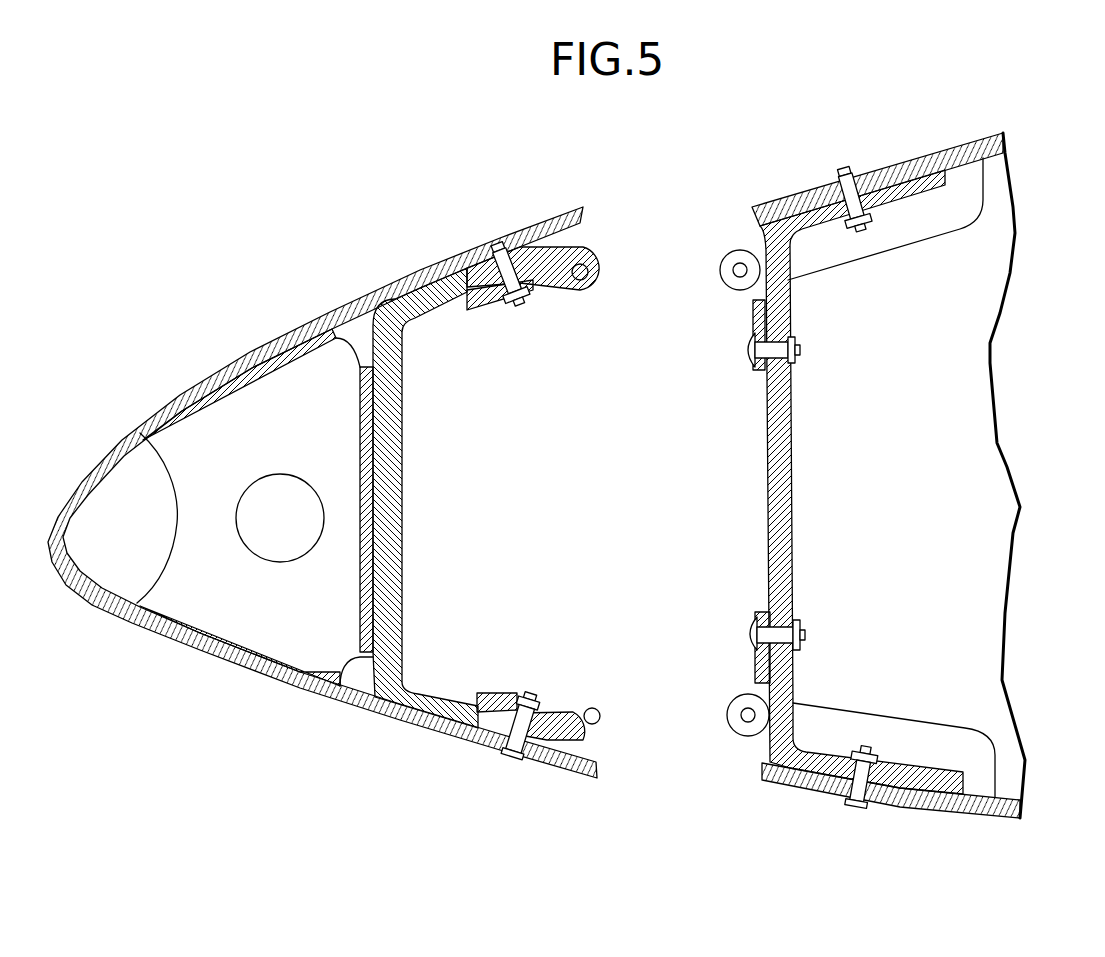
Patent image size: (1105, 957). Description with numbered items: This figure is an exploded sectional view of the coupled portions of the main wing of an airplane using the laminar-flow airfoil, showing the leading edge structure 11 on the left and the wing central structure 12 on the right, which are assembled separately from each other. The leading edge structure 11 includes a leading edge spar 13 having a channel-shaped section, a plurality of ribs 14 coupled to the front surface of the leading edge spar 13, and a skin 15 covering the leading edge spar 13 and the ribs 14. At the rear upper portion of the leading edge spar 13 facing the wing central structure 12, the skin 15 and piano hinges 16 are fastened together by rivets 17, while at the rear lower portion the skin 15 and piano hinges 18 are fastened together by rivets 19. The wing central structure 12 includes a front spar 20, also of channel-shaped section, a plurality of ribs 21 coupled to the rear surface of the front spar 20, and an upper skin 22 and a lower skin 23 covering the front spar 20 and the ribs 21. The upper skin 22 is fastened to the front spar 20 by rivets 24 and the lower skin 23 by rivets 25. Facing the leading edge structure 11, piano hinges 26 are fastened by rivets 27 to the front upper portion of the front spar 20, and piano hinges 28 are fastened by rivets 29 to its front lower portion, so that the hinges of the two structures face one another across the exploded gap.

The leading edge structure 11 is at (324, 473).
The wing central structure 12 is at (881, 454).
The leading edge spar 13 is at (397, 552).
The ribs 14 is at (173, 480).
The skin 15 is at (223, 363).
The piano hinges 16 is at (541, 278).
The rivets 17 is at (497, 243).
The piano hinges 18 is at (557, 713).
The rivets 19 is at (513, 750).
The front spar 20 is at (783, 497).
The ribs 21 is at (985, 465).
The upper skin 22 is at (970, 147).
The lower skin 23 is at (980, 807).
The rivets 24 is at (855, 168).
The rivets 25 is at (860, 793).
The piano hinges 26 is at (750, 327).
The rivets 27 is at (740, 353).
The piano hinges 28 is at (753, 670).
The rivets 29 is at (750, 637).